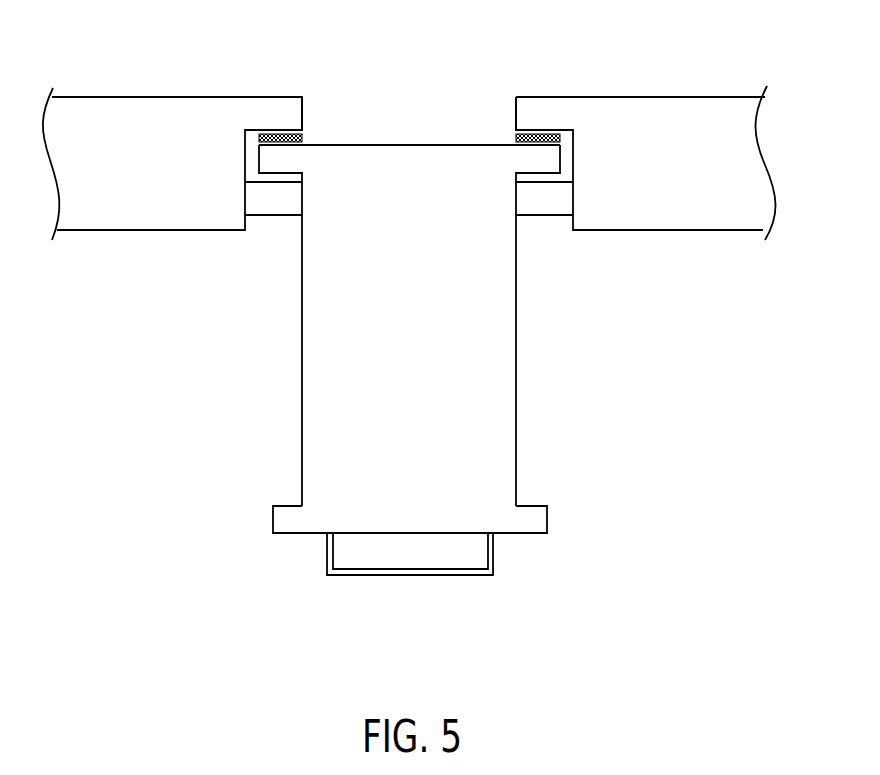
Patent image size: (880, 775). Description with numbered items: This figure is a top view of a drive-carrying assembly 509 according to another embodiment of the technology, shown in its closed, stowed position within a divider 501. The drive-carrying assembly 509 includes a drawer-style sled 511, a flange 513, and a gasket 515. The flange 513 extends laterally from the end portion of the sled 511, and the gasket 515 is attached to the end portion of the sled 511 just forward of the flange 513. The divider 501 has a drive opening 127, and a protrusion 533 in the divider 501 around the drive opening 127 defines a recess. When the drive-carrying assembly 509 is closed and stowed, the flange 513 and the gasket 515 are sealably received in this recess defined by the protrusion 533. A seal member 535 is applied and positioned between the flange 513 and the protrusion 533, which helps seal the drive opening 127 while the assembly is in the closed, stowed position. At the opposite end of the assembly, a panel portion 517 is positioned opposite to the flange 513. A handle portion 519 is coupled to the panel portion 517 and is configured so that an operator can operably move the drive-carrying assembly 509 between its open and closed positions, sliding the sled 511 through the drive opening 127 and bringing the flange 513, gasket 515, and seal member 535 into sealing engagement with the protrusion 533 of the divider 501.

The divider 501 is at (684, 108).
The protrusion 533 is at (271, 110).
The seal member 535 is at (303, 137).
The drive-carrying assembly 509 is at (502, 411).
The flange 513 is at (278, 158).
The gasket 515 is at (268, 205).
The drawer-style sled 511 is at (488, 328).
The panel portion 517 is at (533, 523).
The handle portion 519 is at (345, 572).
The drive opening 127 is at (408, 122).